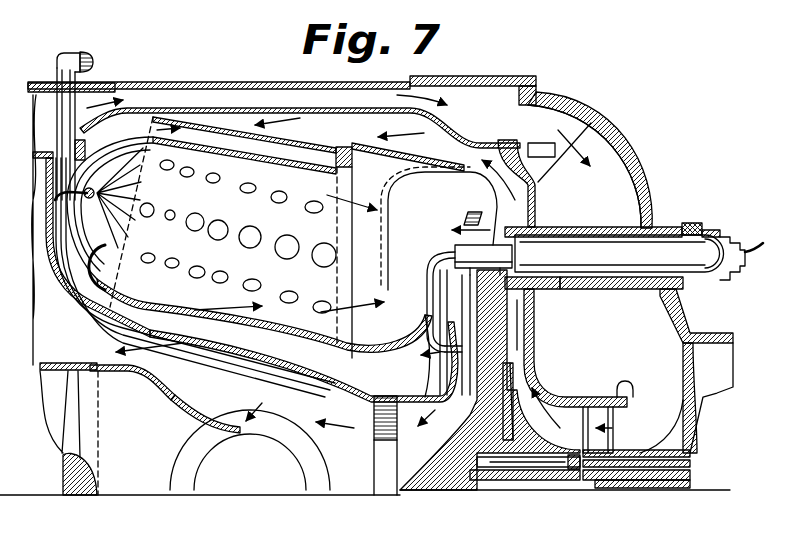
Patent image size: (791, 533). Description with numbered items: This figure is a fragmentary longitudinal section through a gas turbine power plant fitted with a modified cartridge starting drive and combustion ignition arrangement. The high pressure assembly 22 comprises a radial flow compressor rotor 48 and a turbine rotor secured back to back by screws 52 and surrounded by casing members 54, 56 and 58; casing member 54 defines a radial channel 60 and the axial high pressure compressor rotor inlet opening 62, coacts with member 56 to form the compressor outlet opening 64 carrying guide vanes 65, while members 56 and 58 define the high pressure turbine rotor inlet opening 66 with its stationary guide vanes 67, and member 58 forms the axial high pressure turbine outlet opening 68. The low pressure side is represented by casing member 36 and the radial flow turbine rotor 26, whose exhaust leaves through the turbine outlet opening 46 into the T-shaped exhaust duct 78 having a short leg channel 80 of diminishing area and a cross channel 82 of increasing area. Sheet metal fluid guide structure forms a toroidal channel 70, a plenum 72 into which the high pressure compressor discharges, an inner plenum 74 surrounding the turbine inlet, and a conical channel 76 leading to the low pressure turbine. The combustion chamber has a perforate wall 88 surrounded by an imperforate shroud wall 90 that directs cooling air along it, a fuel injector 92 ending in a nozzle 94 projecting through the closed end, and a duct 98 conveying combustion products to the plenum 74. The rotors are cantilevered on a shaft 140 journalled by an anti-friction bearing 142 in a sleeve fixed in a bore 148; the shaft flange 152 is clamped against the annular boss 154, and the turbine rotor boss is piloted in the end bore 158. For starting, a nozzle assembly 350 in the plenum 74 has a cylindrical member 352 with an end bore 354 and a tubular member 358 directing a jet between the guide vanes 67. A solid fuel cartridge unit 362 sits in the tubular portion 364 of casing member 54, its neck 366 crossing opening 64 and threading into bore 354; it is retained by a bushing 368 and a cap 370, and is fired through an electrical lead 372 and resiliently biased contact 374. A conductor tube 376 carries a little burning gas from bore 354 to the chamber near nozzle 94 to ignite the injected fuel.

The high pressure assembly 22 is at (546, 373).
The radial flow turbine rotor 26 is at (66, 395).
The casing member 36 is at (56, 356).
The turbine outlet opening 46 is at (84, 364).
The radial flow compressor rotor 48 is at (566, 400).
The screws 52 is at (458, 491).
The casing member 54 is at (634, 156).
The casing member 56 is at (450, 414).
The casing member 58 is at (425, 396).
The channel 60 is at (610, 150).
The high pressure compressor rotor inlet opening 62 is at (621, 413).
The compressor outlet opening 64 is at (537, 198).
The guide vanes 65 is at (536, 318).
The high pressure turbine rotor inlet opening 66 is at (428, 303).
The guide vanes 67 is at (427, 351).
The high pressure turbine outlet opening 68 is at (398, 406).
The toroidal channel 70 is at (184, 88).
The plenum 72 is at (352, 113).
The plenum 74 is at (460, 170).
The channel 76 is at (260, 373).
The exhaust duct 78 is at (222, 408).
The channel 80 is at (165, 395).
The cross channel 82 is at (280, 458).
The perforate wall 88 is at (204, 306).
The imperforate wall 90 is at (302, 147).
The fuel injector 92 is at (57, 60).
The nozzle 94 is at (110, 212).
The duct 98 is at (388, 184).
The shaft 140 is at (642, 490).
The anti-friction bearing 142 is at (592, 482).
The bore 148 is at (686, 453).
The flange 152 is at (498, 491).
The annular boss 154 is at (536, 491).
The end bore 158 is at (562, 491).
The nozzle assembly 350 is at (455, 245).
The member 352 is at (452, 228).
The end bore 354 is at (527, 255).
The tubular member 358 is at (455, 254).
The cartridge unit 362 is at (645, 272).
The tubular portion 364 is at (602, 287).
The neck 366 is at (536, 290).
The bushing 368 is at (684, 222).
The cap 370 is at (698, 224).
The electrical lead 372 is at (756, 264).
The contact 374 is at (730, 242).
The conductor tube 376 is at (312, 396).